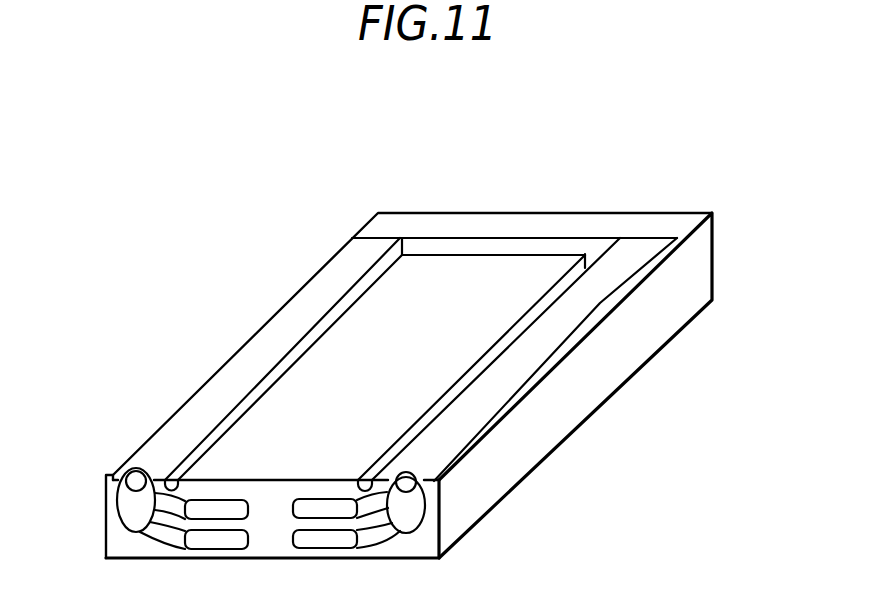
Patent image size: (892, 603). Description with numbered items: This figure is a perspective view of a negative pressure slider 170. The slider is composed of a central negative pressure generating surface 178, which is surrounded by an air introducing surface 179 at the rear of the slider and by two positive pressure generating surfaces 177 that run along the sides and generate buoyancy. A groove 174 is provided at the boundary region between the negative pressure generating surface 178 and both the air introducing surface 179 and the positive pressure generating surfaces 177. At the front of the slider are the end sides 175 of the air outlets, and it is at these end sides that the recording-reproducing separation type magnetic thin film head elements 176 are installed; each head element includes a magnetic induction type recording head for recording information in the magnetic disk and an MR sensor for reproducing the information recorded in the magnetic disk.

The negative pressure slider 170 is at (540, 128).
The groove 174 is at (220, 430).
The end sides of air outlets 175 is at (135, 482).
The recording-reproducing separation type magnetic thin film head element 176 is at (128, 513).
The positive pressure generating surface 177 is at (665, 379).
The negative pressure generating surface 178 is at (428, 270).
The air introducing surface 179 is at (604, 226).